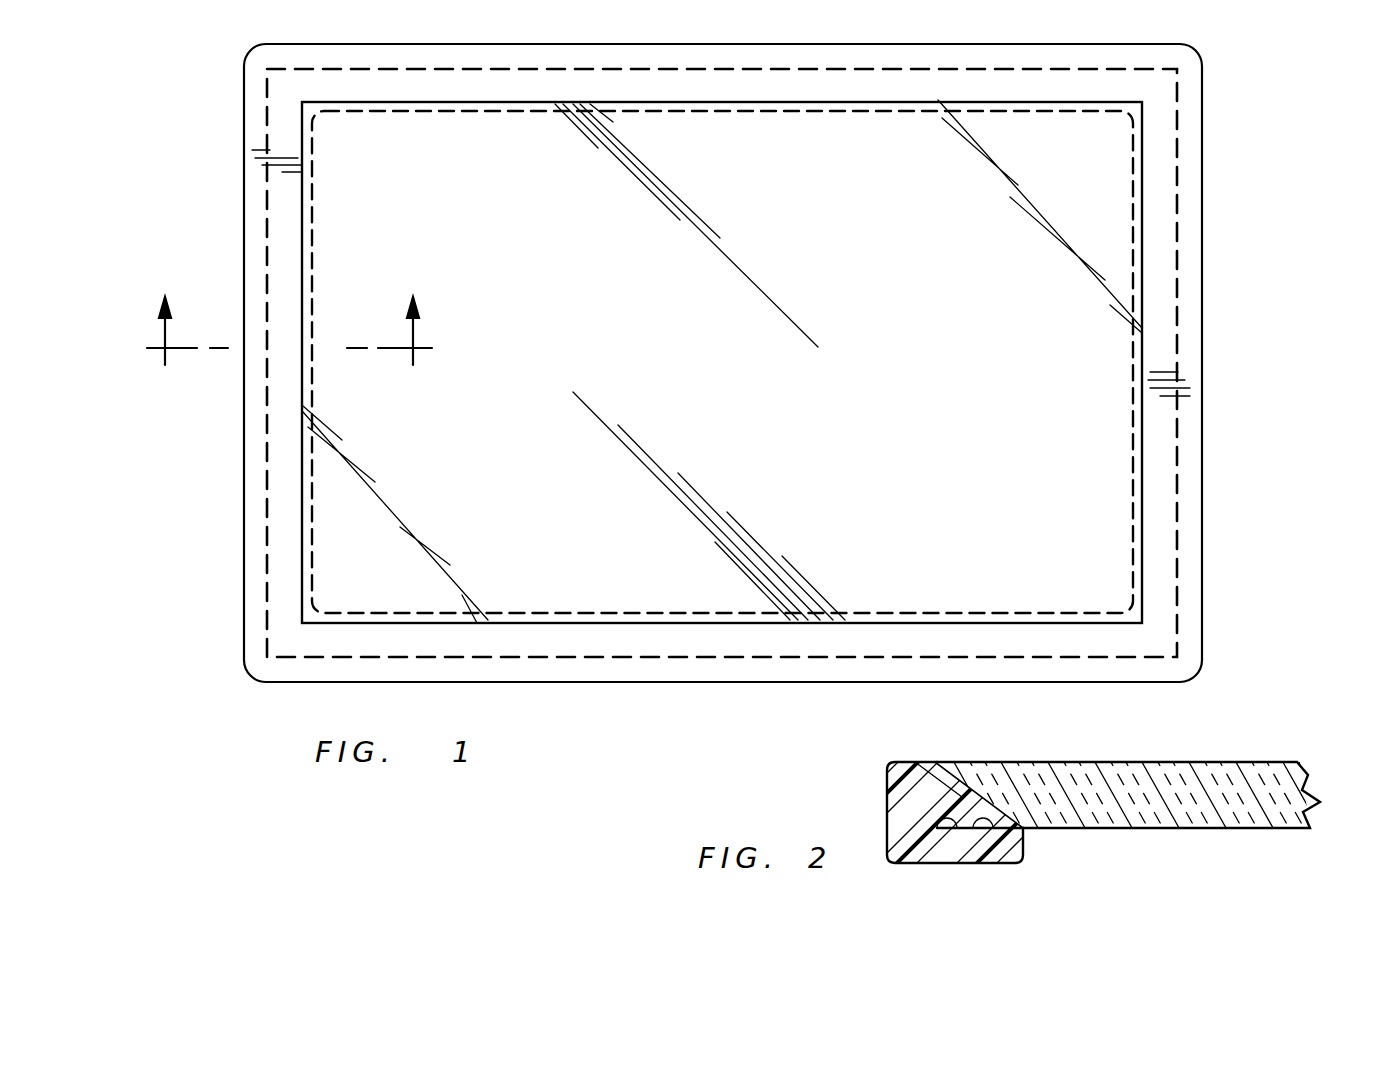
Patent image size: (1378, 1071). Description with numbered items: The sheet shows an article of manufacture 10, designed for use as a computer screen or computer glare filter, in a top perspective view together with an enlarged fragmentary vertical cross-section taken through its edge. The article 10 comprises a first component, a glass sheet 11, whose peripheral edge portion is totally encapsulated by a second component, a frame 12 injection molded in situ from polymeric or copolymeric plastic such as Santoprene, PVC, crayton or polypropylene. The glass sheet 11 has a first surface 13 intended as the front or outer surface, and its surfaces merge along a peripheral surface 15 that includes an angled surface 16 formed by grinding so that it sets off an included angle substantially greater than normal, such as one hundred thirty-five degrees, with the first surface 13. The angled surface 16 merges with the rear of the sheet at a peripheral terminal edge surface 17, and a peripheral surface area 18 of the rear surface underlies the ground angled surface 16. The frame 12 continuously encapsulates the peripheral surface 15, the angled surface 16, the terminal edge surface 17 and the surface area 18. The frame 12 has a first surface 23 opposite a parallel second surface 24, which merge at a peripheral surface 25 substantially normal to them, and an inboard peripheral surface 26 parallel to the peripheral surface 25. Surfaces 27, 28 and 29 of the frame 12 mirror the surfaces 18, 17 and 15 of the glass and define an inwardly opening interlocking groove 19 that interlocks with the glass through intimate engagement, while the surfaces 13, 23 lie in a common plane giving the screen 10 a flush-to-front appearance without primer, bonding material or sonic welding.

In FIG. 1, the article of manufacture 10 is at (1217, 142).
In FIG. 2, the article of manufacture 10 is at (1330, 690).
In FIG. 1, the glass sheet 11 is at (1112, 518).
In FIG. 2, the glass sheet 11 is at (1157, 783).
In FIG. 1, the frame 12 is at (735, 388).
In FIG. 2, the frame 12 is at (936, 835).
In FIG. 1, the first surface 13 is at (750, 383).
In FIG. 2, the first surface 13 is at (1280, 762).
In FIG. 2, the peripheral surface 15 is at (950, 762).
In FIG. 2, the angled surface 16 is at (968, 762).
In FIG. 1, the peripheral terminal edge surface 17 is at (690, 68).
In FIG. 2, the peripheral terminal edge surface 17 is at (897, 808).
In FIG. 2, the peripheral surface area 18 is at (1030, 835).
In FIG. 2, the interlocking groove 19 is at (995, 797).
In FIG. 1, the first surface 23 is at (890, 82).
In FIG. 2, the first surface 23 is at (905, 762).
In FIG. 2, the second surface 24 is at (905, 863).
In FIG. 1, the peripheral surface 25 is at (244, 510).
In FIG. 2, the peripheral surface 25 is at (893, 778).
In FIG. 1, the inboard peripheral surface 26 is at (538, 608).
In FIG. 2, the inboard peripheral surface 26 is at (1023, 848).
In FIG. 2, the surface 27 is at (985, 832).
In FIG. 1, the surface 28 is at (878, 655).
In FIG. 2, the surface 28 is at (948, 832).
In FIG. 2, the surface 29 is at (1000, 763).